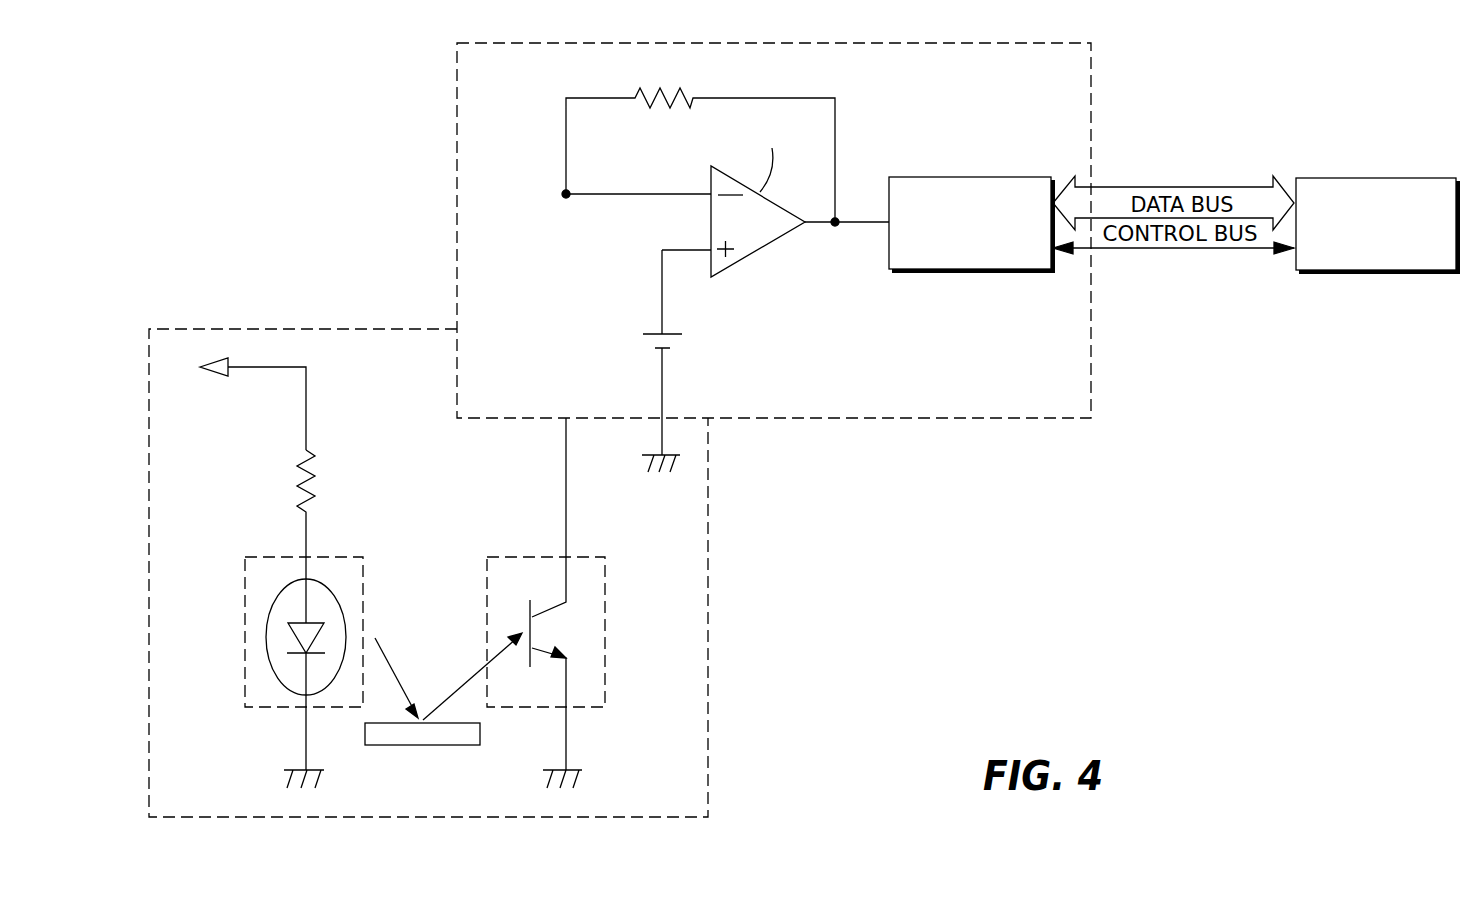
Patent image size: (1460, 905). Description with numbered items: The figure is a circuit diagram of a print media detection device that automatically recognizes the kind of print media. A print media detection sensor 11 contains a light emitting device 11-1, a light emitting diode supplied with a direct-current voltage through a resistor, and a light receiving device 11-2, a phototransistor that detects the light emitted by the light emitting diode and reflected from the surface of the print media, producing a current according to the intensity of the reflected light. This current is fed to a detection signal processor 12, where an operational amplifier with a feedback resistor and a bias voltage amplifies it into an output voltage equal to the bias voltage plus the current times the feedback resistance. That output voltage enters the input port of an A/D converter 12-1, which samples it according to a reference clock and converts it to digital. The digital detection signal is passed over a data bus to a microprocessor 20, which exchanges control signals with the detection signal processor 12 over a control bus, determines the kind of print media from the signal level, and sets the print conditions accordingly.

The print media detection sensor 11 is at (308, 329).
The light emitting device 11-1 is at (365, 570).
The light receiving device 11-2 is at (605, 578).
The detection signal processor 12 is at (915, 43).
The A/D converter 12-1 is at (953, 177).
The microprocessor 20 is at (1360, 179).